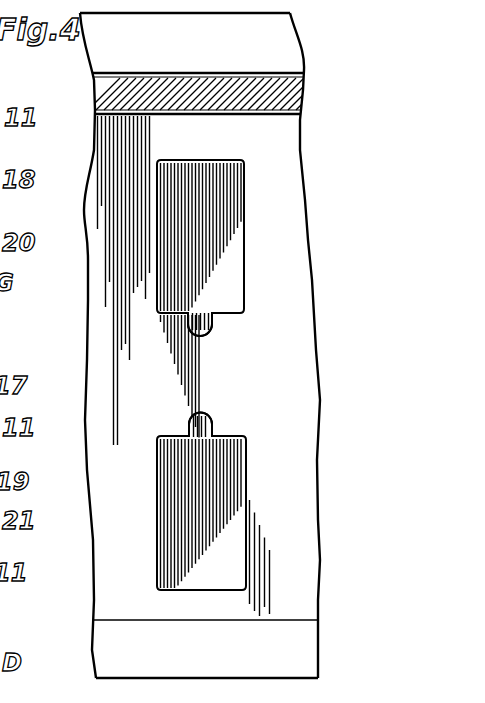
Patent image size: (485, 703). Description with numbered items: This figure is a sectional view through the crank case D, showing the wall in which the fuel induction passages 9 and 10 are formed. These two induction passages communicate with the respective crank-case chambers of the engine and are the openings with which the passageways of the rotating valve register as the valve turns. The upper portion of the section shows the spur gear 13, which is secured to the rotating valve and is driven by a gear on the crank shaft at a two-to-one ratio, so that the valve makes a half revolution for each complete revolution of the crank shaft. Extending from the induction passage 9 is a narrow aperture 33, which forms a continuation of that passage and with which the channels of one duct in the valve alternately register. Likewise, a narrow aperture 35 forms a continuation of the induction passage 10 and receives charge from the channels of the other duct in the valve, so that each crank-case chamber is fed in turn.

The crank case D is at (285, 290).
The spur gear 13 is at (263, 89).
The fuel induction passage 9 is at (232, 248).
The narrow aperture 33 is at (214, 331).
The fuel induction passage 10 is at (222, 498).
The narrow aperture 35 is at (240, 431).